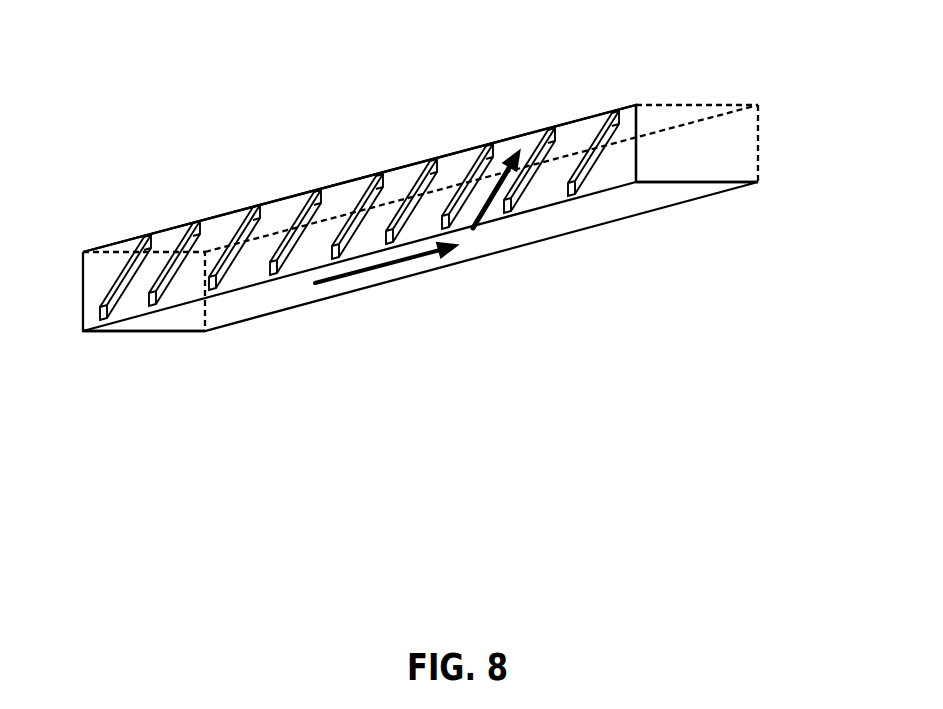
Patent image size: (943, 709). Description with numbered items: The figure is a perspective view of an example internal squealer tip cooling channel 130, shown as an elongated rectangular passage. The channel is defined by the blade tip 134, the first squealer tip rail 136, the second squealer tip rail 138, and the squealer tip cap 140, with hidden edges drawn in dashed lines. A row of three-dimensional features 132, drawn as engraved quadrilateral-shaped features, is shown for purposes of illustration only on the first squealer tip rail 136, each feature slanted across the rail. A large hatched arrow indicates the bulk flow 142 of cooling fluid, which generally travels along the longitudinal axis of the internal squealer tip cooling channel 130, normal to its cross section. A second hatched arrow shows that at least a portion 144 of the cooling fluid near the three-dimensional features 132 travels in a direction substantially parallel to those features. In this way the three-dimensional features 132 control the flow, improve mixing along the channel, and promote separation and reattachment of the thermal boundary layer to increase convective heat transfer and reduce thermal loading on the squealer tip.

The internal squealer tip cooling channel 130 is at (437, 229).
The three-dimensional features 132 is at (348, 183).
The blade tip 134 is at (153, 350).
The first squealer tip rail 136 is at (600, 96).
The second squealer tip rail 138 is at (778, 134).
The squealer tip cap 140 is at (706, 88).
The bulk flow 142 is at (320, 308).
The portion of cooling fluid 144 is at (488, 238).